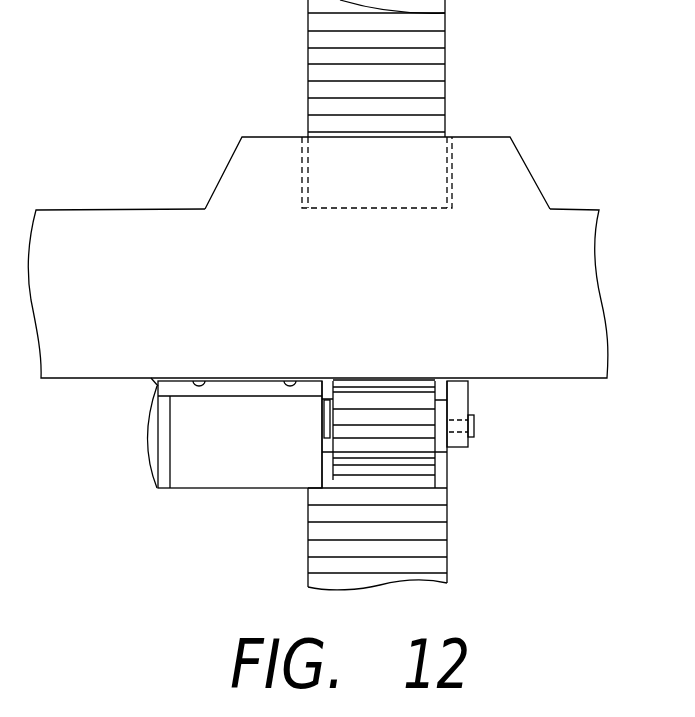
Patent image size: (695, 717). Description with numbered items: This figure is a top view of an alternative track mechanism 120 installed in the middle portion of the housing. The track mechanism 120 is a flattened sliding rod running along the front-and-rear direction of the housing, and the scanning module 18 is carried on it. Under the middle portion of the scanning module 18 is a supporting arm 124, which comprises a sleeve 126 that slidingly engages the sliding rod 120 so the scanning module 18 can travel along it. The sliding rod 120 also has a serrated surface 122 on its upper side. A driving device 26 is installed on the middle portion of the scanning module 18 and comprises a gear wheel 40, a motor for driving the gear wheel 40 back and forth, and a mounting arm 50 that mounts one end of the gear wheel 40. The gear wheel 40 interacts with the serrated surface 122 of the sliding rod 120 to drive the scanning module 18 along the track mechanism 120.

The scanning module 18 is at (395, 312).
The driving device 26 is at (250, 515).
The gear wheel 40 is at (417, 467).
The mounting arm 50 is at (463, 401).
The track mechanism 120 is at (485, 34).
The serrated surface 122 is at (437, 550).
The supporting arm 124 is at (518, 182).
The sleeve 126 is at (450, 160).